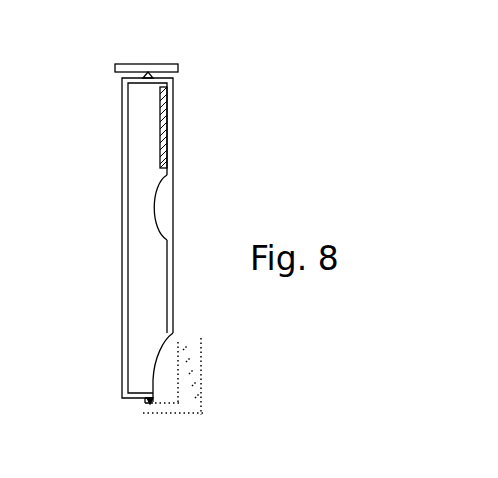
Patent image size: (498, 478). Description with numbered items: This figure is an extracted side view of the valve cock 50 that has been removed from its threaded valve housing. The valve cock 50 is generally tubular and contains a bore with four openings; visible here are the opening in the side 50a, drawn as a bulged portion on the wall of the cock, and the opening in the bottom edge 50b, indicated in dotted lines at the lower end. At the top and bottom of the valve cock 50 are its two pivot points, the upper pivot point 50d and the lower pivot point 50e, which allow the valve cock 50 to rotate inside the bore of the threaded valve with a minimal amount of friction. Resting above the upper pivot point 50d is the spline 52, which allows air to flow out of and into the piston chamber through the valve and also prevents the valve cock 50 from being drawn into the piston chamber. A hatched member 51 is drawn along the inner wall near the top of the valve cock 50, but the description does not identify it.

The valve cock 50 is at (187, 322).
The side opening 50a is at (172, 207).
The bottom edge opening 50b is at (153, 357).
The upper pivot point 50d is at (147, 74).
The lower pivot point 50e is at (150, 402).
The elastic member 51 is at (172, 133).
The spline 52 is at (127, 64).